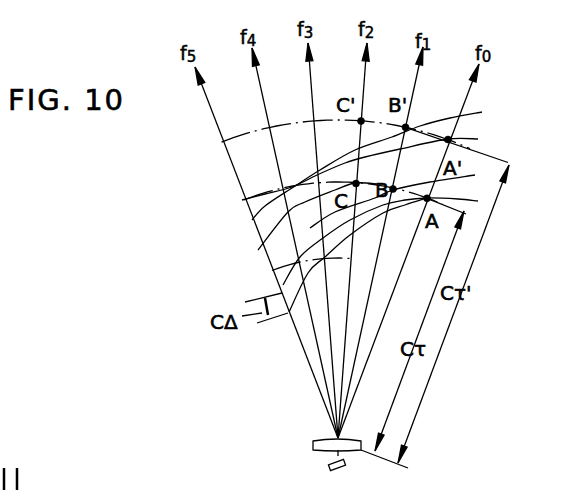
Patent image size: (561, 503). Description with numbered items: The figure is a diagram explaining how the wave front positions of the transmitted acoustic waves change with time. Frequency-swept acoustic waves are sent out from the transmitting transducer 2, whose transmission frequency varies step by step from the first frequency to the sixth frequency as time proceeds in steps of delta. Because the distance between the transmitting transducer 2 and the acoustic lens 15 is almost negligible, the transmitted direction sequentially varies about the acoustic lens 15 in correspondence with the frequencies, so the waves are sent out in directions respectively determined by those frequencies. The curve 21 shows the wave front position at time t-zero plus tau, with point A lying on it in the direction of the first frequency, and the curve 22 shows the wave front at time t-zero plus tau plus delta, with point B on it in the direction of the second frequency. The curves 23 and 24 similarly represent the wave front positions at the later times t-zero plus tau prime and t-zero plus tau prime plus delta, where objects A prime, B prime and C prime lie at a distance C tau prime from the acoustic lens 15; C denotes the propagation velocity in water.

The acoustic lens 15 is at (316, 441).
The transmitting transducer 2 is at (345, 466).
The curve 21 is at (298, 328).
The curve 22 is at (270, 277).
The curve 23 is at (270, 252).
The curve 24 is at (254, 224).